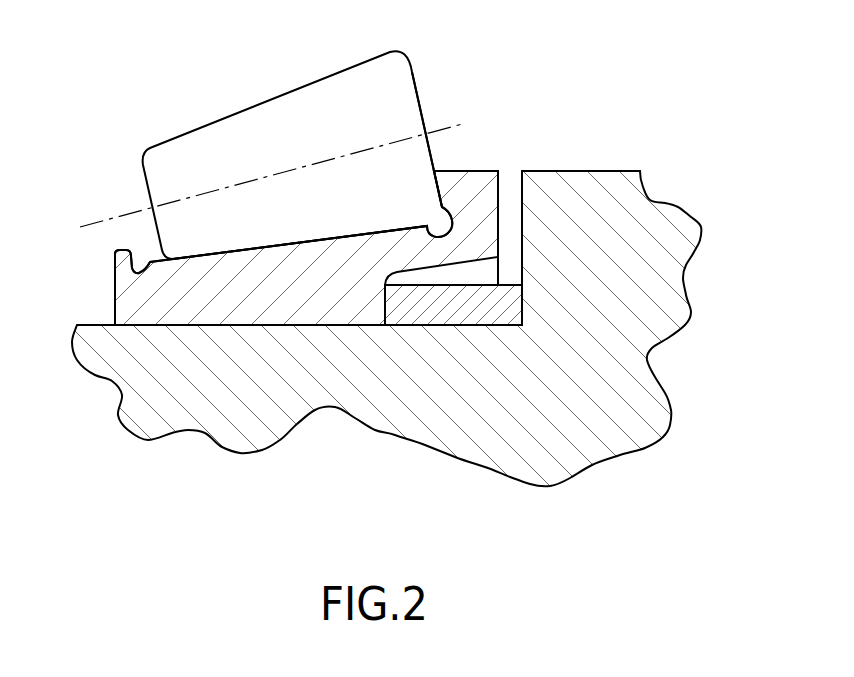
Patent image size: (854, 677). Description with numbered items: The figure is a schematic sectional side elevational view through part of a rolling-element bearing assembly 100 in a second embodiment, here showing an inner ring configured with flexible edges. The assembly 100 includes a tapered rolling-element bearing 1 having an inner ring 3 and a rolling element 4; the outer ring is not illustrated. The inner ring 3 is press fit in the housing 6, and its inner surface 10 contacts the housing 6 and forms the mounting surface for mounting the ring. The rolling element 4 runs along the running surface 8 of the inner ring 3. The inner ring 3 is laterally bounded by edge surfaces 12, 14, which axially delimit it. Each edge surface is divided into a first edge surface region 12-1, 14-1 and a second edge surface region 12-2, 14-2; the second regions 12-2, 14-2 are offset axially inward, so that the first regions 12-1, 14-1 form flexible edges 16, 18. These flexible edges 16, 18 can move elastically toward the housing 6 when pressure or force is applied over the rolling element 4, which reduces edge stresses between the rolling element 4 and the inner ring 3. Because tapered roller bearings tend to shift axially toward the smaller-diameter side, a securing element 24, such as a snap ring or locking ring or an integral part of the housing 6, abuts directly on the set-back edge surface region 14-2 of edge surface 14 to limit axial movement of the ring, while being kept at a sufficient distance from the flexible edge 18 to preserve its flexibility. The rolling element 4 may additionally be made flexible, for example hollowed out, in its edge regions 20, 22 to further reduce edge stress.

The tapered rolling-element bearing 1 is at (486, 118).
The rolling-element bearing assembly 100 is at (235, 53).
The rolling element 4 is at (376, 82).
The edge region 22 is at (402, 102).
The edge region 20 is at (152, 181).
The edge surface 12 is at (115, 278).
The first edge surface region 12-1 is at (113, 262).
The second edge surface region 12-2 is at (180, 293).
The running surface 8 is at (317, 240).
The flexible edge 16 is at (134, 288).
The inner ring 3 is at (487, 185).
The housing 6 is at (661, 282).
The inner surface 10 is at (270, 327).
The edge surface 14 is at (498, 200).
The first edge surface region 14-1 is at (498, 227).
The second edge surface region 14-2 is at (386, 293).
The securing element 24 is at (484, 310).
The flexible edge 18 is at (463, 243).